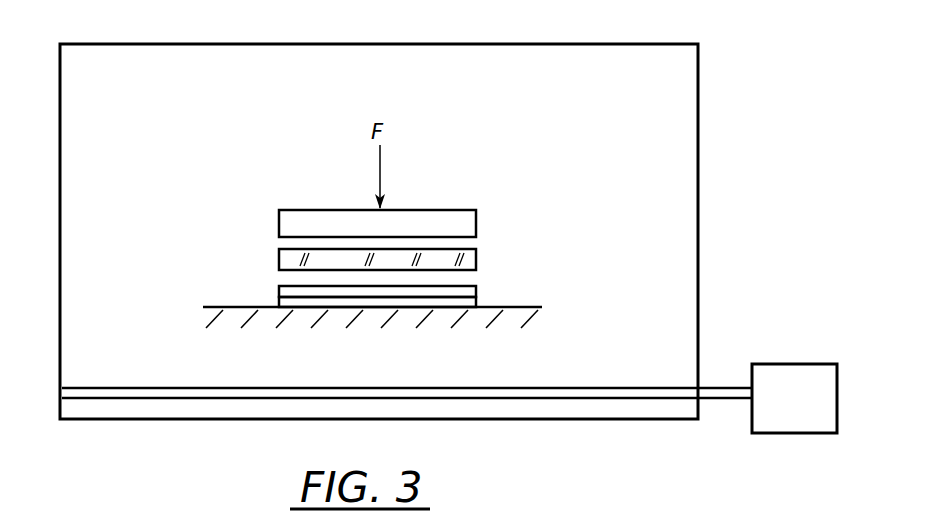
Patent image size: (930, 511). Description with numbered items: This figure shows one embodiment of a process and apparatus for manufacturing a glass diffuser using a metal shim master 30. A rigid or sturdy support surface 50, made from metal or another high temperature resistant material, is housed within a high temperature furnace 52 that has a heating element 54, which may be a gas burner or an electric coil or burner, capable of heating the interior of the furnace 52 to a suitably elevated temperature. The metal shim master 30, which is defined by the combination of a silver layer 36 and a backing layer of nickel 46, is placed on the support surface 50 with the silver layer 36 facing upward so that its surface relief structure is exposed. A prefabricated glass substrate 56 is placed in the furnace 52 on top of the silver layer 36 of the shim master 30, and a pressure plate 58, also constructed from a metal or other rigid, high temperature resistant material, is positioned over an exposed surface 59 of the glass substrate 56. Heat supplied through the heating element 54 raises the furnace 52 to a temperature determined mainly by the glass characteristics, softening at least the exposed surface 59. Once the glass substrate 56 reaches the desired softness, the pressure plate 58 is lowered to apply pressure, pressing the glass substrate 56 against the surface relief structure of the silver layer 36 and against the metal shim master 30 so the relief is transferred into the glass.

The metal shim master 30 is at (492, 292).
The silver layer 36 is at (281, 290).
The layer of nickel 46 is at (280, 300).
The support surface 50 is at (528, 308).
The furnace 52 is at (700, 170).
The heating element 54 is at (568, 398).
The glass substrate 56 is at (478, 258).
The pressure plate 58 is at (455, 215).
The exposed surface 59 is at (283, 250).